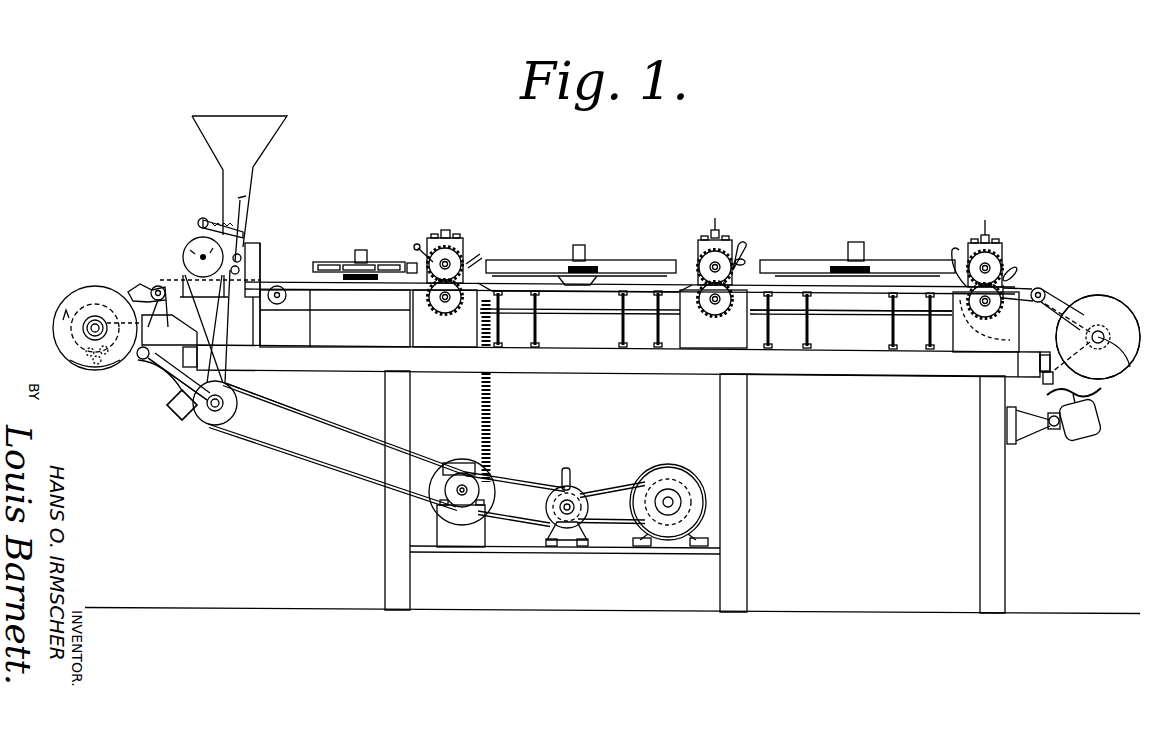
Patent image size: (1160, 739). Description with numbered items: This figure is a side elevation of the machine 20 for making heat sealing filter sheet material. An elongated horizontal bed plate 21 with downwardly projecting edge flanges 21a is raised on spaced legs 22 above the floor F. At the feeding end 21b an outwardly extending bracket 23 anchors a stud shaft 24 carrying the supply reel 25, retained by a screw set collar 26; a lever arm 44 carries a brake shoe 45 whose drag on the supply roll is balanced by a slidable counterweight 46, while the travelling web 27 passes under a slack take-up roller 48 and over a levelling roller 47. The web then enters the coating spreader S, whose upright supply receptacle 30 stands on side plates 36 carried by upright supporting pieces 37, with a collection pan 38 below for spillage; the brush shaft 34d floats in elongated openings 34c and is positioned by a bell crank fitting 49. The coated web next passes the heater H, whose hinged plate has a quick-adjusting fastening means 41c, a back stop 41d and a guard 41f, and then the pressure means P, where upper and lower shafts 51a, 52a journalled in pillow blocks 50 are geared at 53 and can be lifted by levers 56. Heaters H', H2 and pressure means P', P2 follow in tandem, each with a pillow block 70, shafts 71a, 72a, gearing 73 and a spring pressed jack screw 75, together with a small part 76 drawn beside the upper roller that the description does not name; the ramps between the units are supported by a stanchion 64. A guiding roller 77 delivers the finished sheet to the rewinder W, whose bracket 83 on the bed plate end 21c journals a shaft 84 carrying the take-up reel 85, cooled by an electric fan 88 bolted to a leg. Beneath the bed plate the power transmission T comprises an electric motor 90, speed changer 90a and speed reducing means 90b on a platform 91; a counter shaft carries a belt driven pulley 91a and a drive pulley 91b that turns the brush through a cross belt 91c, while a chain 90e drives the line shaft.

The machine 20 is at (800, 250).
The bed plate 21 is at (548, 338).
The edge flanges 21a is at (832, 375).
The feeding end 21b is at (200, 418).
The end of bed plate 21c is at (1026, 359).
The legs 22 is at (1000, 500).
The bracket 23 is at (155, 362).
The stud shaft 24 is at (88, 331).
The reel 25 is at (63, 296).
The screw set collar 26 is at (112, 369).
The travelling web 27 is at (142, 285).
The supply receptacle 30 is at (245, 125).
The elongated openings 34c is at (190, 262).
The brush shaft 34d is at (201, 253).
The side plates 36 is at (248, 258).
The upright supporting pieces 37 is at (312, 338).
The collection pan 38 is at (278, 286).
The fastening means 41c is at (324, 262).
The back stop 41d is at (353, 262).
The guard 41f is at (385, 262).
The lever arm 44 is at (140, 366).
The brake shoe 45 is at (80, 358).
The counterweight 46 is at (178, 412).
The levelling roller 47 is at (160, 286).
The slack take-up roller 48 is at (150, 292).
The bell crank fitting 49 is at (214, 225).
The pillow blocks 50 is at (420, 328).
The upper shaft 51a is at (448, 260).
The lower shaft 52a is at (447, 305).
The gearing 53 is at (434, 266).
The levers 56 is at (486, 257).
The stanchion 64 is at (895, 345).
The pillow block 70 is at (688, 349).
The upper roller shaft 71a is at (712, 265).
The lower roller shaft 72a is at (716, 306).
The gearing 73 is at (735, 262).
The jack screw 75 is at (715, 228).
The guide finger 76 is at (746, 261).
The guiding roller 77 is at (1046, 295).
The bracket 83 is at (1050, 362).
The shaft 84 is at (1130, 368).
The take-up reel 85 is at (1124, 304).
The electric fan 88 is at (1094, 418).
The electric motor 90 is at (672, 478).
The speed changer 90a is at (581, 488).
The speed reducing means 90b is at (462, 452).
The chain 90e is at (493, 437).
The platform / counter shaft 91 is at (245, 435).
The belt driven pulley 91a is at (238, 406).
The drive pulley 91b is at (214, 412).
The cross belt 91c is at (228, 378).
The floor F is at (808, 606).
The heater H is at (365, 237).
The heater H' is at (581, 229).
The heater H2 is at (874, 246).
The pressure means P is at (471, 244).
The pressure means P' is at (721, 233).
The pressure means P2 is at (1008, 240).
The coating spreader S is at (265, 235).
The power transmission T is at (222, 443).
The rewinder W is at (1102, 291).